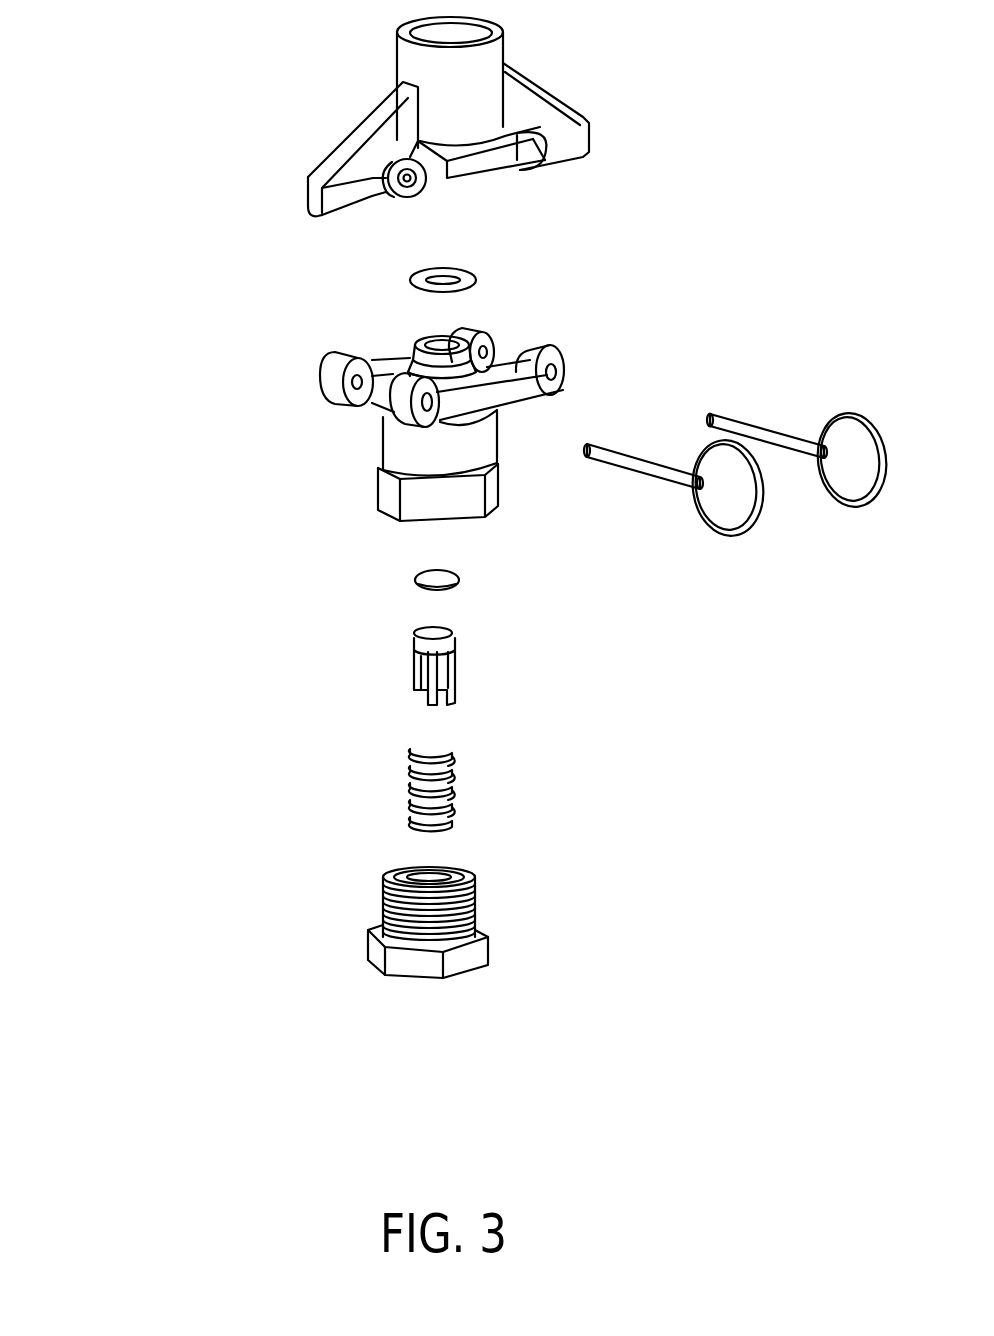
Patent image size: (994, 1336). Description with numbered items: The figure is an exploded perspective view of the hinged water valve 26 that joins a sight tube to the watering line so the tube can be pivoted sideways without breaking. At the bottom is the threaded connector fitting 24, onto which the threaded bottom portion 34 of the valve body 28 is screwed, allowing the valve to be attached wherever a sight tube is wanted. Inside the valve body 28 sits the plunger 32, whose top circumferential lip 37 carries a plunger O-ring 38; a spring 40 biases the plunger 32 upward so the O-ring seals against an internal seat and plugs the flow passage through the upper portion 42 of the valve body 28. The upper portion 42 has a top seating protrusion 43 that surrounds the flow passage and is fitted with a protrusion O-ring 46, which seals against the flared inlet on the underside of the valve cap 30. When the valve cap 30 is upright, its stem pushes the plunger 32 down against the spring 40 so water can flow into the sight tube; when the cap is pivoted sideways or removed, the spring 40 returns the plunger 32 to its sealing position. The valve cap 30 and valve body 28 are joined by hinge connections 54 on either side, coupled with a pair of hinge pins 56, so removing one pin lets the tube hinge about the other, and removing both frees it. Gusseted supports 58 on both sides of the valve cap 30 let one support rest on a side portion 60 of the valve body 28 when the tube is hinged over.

The connector fitting 24 is at (493, 948).
The hinged water valve 26 is at (193, 497).
The valve body 28 is at (433, 420).
The valve cap 30 is at (490, 175).
The plunger 32 is at (483, 652).
The bottom portion 34 is at (500, 495).
The top circumferential lip 37 is at (445, 630).
The plunger O-ring 38 is at (408, 583).
The spring 40 is at (408, 787).
The upper portion 42 is at (497, 372).
The top seating protrusion 43 is at (417, 350).
The protrusion O-ring 46 is at (478, 273).
The hinge connections 54 is at (404, 199).
The hinge pins 56 is at (630, 452).
The gusseted supports 58 is at (340, 139).
The side portion 60 is at (500, 442).